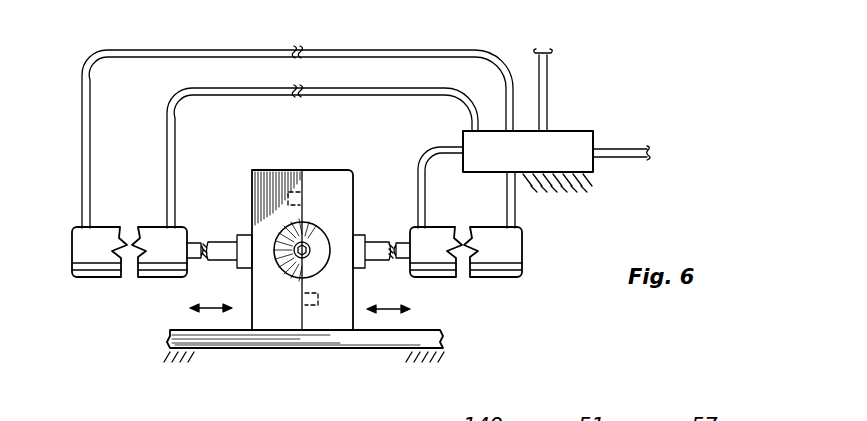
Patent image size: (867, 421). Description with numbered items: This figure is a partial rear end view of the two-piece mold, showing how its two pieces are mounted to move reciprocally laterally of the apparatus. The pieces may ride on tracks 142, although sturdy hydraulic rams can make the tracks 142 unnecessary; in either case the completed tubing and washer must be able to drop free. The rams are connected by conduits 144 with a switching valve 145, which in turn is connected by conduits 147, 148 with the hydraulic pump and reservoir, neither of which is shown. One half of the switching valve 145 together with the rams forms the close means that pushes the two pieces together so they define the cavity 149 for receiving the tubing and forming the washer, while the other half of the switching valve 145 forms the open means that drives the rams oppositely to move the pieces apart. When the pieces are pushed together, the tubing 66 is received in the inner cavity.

The tracks 142 is at (350, 348).
The conduits 144 is at (207, 47).
The switching valve 145 is at (573, 142).
The conduit 147 is at (617, 160).
The conduit 148 is at (548, 77).
The cavity 149 is at (283, 233).
The tubing 66 is at (335, 238).